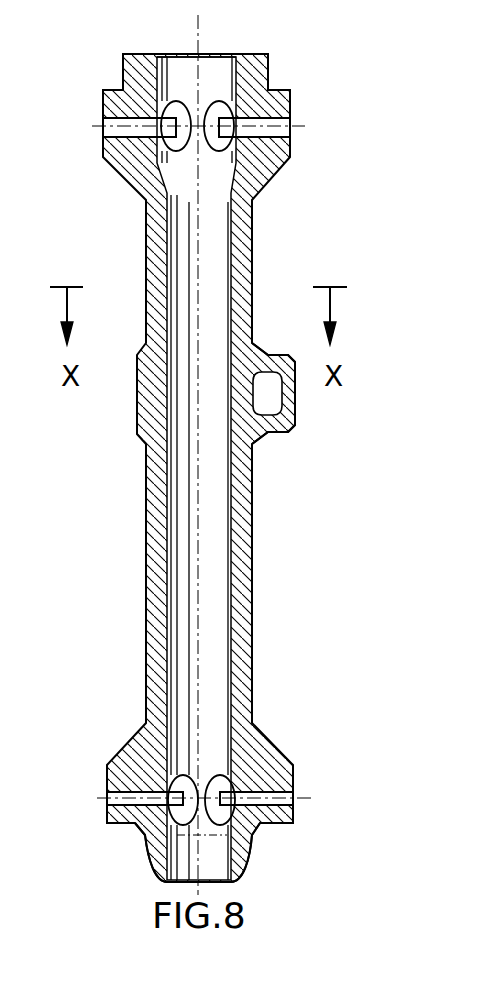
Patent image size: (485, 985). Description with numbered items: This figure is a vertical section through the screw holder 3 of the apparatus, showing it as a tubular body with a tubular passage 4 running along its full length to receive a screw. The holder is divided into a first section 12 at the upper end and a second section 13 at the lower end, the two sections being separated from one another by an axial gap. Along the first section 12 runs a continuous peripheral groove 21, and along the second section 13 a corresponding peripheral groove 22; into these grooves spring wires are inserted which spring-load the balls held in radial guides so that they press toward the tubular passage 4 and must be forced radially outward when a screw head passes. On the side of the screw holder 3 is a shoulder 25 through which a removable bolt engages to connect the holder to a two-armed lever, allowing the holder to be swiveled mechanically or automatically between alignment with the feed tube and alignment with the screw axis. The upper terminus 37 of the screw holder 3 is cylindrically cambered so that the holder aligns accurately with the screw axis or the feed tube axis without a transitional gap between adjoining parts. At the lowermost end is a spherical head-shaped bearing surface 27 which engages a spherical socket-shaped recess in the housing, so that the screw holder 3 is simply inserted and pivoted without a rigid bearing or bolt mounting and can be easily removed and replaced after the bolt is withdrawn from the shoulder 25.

The screw holder 3 is at (245, 600).
The tubular passage 4 is at (218, 668).
The first section 12 is at (312, 126).
The second section 13 is at (312, 797).
The peripheral groove 21 is at (110, 100).
The peripheral groove 22 is at (125, 800).
The shoulder 25 is at (293, 420).
The bearing surface 27 is at (247, 860).
The upper terminus 37 is at (232, 53).